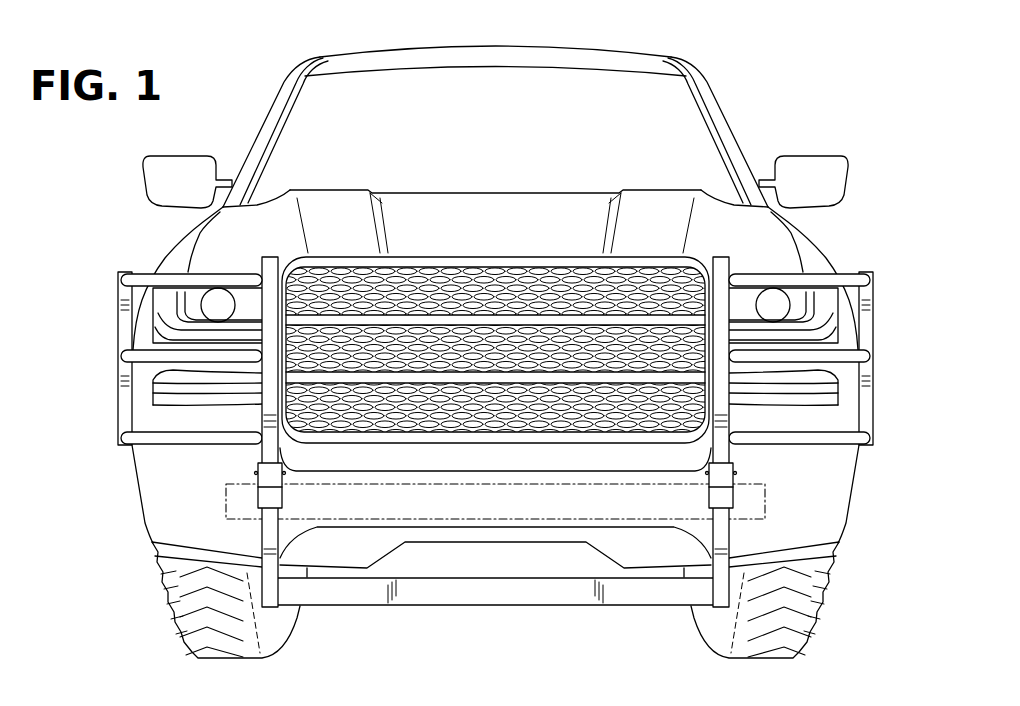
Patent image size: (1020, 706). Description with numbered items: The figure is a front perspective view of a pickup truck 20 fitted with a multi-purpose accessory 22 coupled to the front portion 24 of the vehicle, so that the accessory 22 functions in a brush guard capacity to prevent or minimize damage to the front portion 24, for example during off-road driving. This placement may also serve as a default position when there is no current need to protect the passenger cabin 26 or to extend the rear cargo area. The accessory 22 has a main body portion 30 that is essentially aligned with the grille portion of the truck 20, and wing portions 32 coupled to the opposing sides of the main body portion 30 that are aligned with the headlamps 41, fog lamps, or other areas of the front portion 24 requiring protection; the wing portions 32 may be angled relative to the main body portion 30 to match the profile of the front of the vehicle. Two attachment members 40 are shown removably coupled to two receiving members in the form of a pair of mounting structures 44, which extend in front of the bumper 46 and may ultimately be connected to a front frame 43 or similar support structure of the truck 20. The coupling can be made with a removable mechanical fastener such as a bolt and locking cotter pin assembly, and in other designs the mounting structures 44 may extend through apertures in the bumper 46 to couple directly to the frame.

The pickup truck 20 is at (794, 88).
The multi-purpose accessory 22 is at (889, 340).
The front portion 24 is at (130, 555).
The passenger cabin 26 is at (282, 99).
The main body portion 30 is at (656, 252).
The wing portions 32 is at (860, 267).
The attachment members 40 is at (729, 450).
The headlamps 41 is at (177, 303).
The front frame 43 is at (452, 527).
The mounting structures 44 is at (266, 497).
The bumper 46 is at (147, 475).